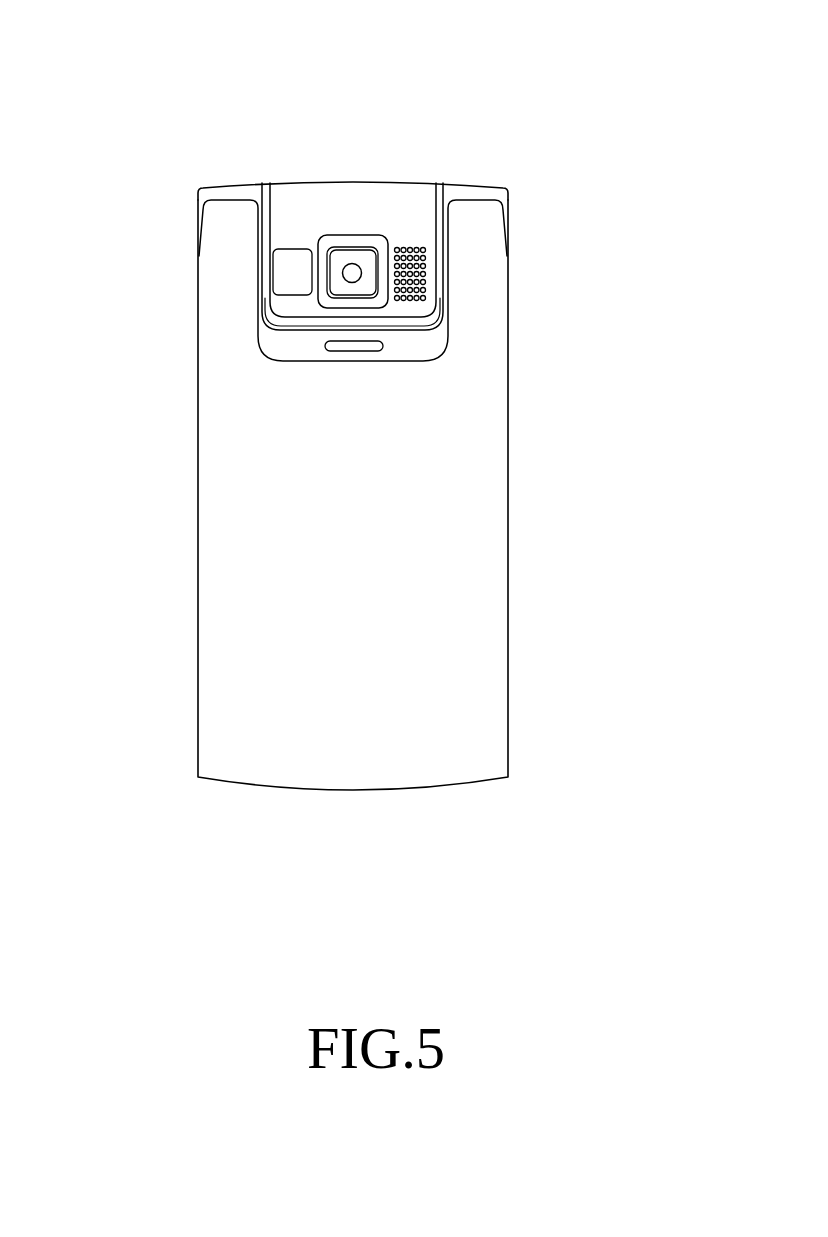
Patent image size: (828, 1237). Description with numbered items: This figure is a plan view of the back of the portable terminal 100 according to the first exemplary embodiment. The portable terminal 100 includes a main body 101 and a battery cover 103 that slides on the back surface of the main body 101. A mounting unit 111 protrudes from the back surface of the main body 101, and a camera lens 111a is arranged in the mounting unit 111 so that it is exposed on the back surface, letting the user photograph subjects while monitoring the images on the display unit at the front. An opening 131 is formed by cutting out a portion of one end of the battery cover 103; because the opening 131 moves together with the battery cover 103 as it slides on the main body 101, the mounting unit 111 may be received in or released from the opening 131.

The portable terminal 100 is at (367, 44).
The main body 101 is at (513, 187).
The battery cover 103 is at (186, 497).
The mounting unit 111 is at (381, 203).
The camera lens 111a is at (352, 272).
The opening 131 is at (382, 328).